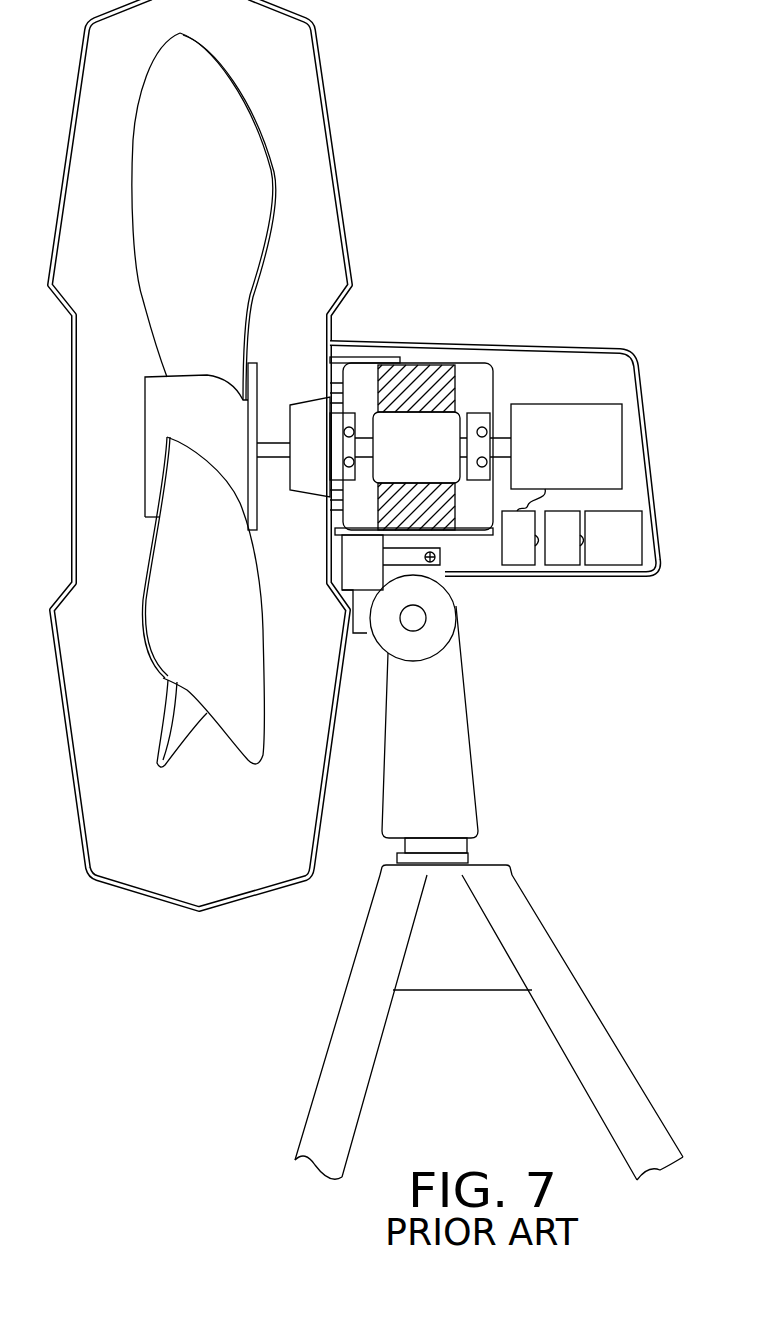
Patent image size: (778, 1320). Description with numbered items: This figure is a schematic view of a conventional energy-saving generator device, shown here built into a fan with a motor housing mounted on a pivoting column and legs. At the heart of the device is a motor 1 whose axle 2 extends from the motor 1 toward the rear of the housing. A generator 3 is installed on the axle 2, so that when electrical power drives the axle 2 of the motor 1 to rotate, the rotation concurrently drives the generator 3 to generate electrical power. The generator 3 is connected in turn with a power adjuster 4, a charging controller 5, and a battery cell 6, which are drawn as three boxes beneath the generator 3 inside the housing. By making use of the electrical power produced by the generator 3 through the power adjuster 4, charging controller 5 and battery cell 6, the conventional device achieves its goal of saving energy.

The motor 1 is at (407, 423).
The axle 2 is at (502, 447).
The generator 3 is at (573, 412).
The power adjuster 4 is at (520, 564).
The charging controller 5 is at (565, 564).
The battery cell 6 is at (612, 564).